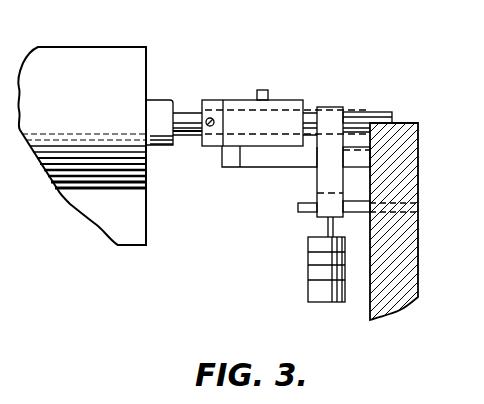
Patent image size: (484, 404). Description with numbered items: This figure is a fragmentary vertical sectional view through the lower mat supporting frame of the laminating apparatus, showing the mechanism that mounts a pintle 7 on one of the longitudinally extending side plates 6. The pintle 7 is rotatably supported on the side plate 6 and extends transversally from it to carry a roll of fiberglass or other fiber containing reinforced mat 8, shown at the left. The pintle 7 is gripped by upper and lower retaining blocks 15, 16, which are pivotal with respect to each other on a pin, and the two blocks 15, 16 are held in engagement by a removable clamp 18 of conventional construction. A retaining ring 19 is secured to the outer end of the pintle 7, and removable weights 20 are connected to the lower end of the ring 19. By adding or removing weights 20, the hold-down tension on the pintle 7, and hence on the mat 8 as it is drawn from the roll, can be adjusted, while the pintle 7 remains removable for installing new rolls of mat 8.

The side plate 6 is at (376, 302).
The pintle 7 is at (368, 112).
The reinforced mat 8 is at (118, 53).
The upper retaining block 15 is at (238, 103).
The lower retaining block 16 is at (245, 141).
The removable clamp 18 is at (267, 93).
The retaining ring 19 is at (322, 175).
The removable weight 20 is at (318, 288).